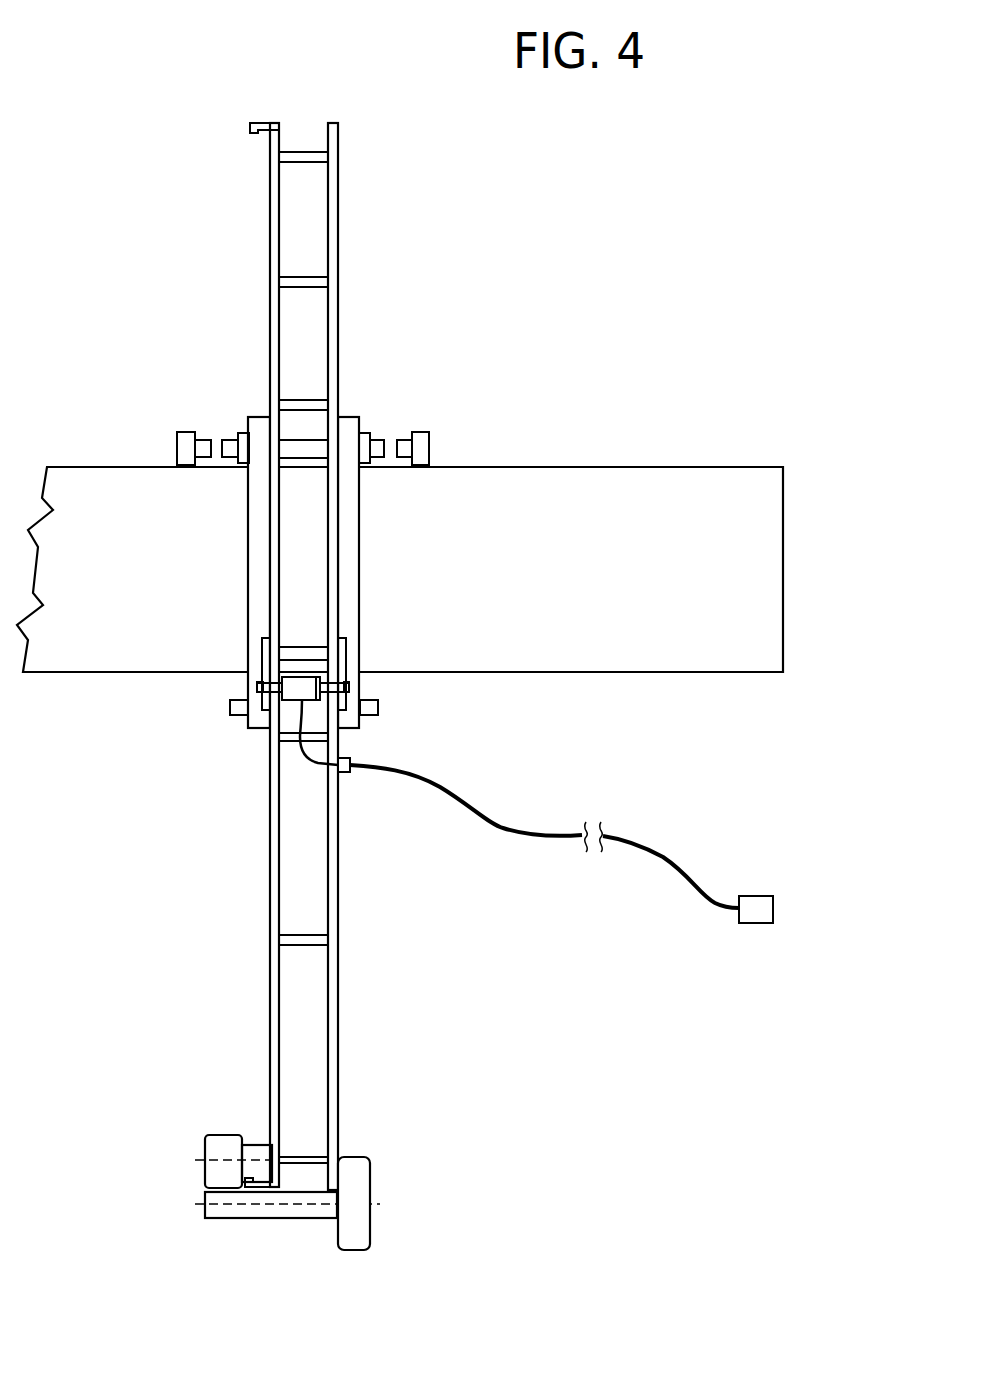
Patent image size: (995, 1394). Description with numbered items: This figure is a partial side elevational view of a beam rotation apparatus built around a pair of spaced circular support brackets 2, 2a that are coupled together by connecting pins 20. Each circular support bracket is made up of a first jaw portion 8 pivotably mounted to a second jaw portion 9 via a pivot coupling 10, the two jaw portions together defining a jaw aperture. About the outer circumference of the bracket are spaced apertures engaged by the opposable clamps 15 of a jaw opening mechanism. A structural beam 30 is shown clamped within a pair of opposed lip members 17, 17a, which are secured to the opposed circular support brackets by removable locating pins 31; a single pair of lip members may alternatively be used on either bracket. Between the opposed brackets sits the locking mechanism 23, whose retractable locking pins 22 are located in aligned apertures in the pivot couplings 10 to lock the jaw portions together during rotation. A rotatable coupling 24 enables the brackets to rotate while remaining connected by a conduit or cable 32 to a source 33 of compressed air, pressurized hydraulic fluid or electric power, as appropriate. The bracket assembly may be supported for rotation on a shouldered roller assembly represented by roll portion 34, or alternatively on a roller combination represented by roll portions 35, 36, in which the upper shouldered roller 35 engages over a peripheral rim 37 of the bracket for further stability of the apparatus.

The circular support bracket 2 is at (298, 647).
The circular support bracket 2a is at (270, 192).
The first jaw portion 8 is at (335, 248).
The second jaw portion 9 is at (272, 912).
The pivot coupling 10 is at (263, 652).
The opposable clamps 15 is at (182, 433).
The lip member 17 is at (360, 508).
The lip member 17a is at (247, 508).
The connecting pins 20 is at (300, 156).
The retractable locking pins 22 is at (260, 688).
The locking mechanism 23 is at (297, 688).
The rotatable coupling 24 is at (350, 768).
The structural beam 30 is at (650, 467).
The removable locating pins 31 is at (300, 448).
The conduit or cable 32 is at (502, 828).
The source 33 is at (757, 913).
The roll portion 34 is at (370, 1192).
The upper shouldered roller 35 is at (205, 1168).
The roll portion 36 is at (205, 1210).
The peripheral rim 37 is at (257, 123).